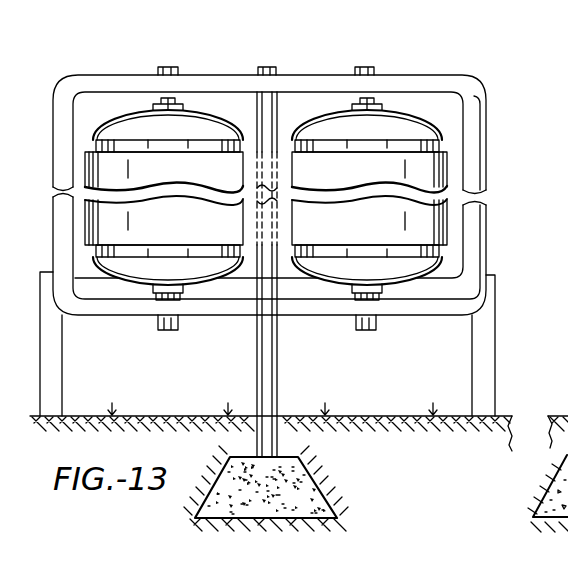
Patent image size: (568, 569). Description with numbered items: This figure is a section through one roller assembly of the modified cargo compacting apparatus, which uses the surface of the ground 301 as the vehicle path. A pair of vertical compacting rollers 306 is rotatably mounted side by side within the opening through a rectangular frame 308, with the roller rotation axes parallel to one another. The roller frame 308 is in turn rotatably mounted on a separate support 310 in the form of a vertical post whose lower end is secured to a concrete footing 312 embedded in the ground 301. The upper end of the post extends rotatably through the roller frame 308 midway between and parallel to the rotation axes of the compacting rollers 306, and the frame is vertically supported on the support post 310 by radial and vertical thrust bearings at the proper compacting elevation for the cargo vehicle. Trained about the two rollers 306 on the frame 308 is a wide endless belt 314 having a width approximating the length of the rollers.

The ground 301 is at (550, 376).
The compacting rollers 306 is at (323, 122).
The rectangular frame 308 is at (453, 86).
The support 310 is at (257, 371).
The concrete footing 312 is at (307, 468).
The endless belt 314 is at (427, 168).